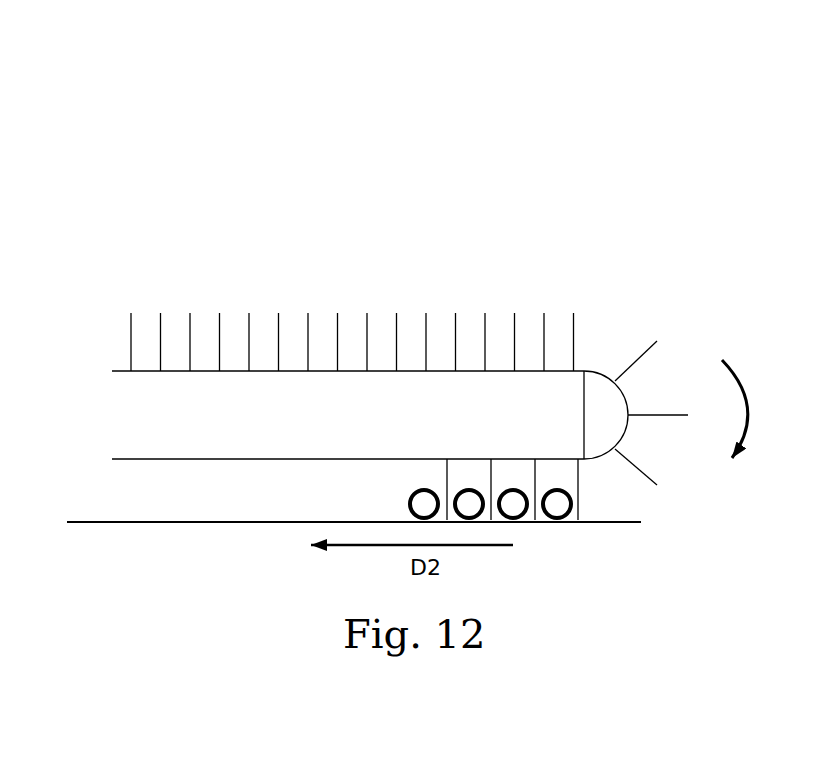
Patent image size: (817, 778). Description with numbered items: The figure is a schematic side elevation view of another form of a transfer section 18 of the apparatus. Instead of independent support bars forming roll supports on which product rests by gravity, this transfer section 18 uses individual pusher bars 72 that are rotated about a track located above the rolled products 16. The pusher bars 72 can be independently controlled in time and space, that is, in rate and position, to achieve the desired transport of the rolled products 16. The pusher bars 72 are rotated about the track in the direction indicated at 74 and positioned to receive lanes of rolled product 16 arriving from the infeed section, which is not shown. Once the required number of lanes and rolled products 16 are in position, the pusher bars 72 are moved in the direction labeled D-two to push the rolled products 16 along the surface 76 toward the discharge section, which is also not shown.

The transfer section 18 is at (325, 265).
The pusher bars 72 is at (643, 350).
The rolled products 16 is at (557, 512).
The surface 76 is at (138, 523).
The direction of rotation 74 is at (747, 403).